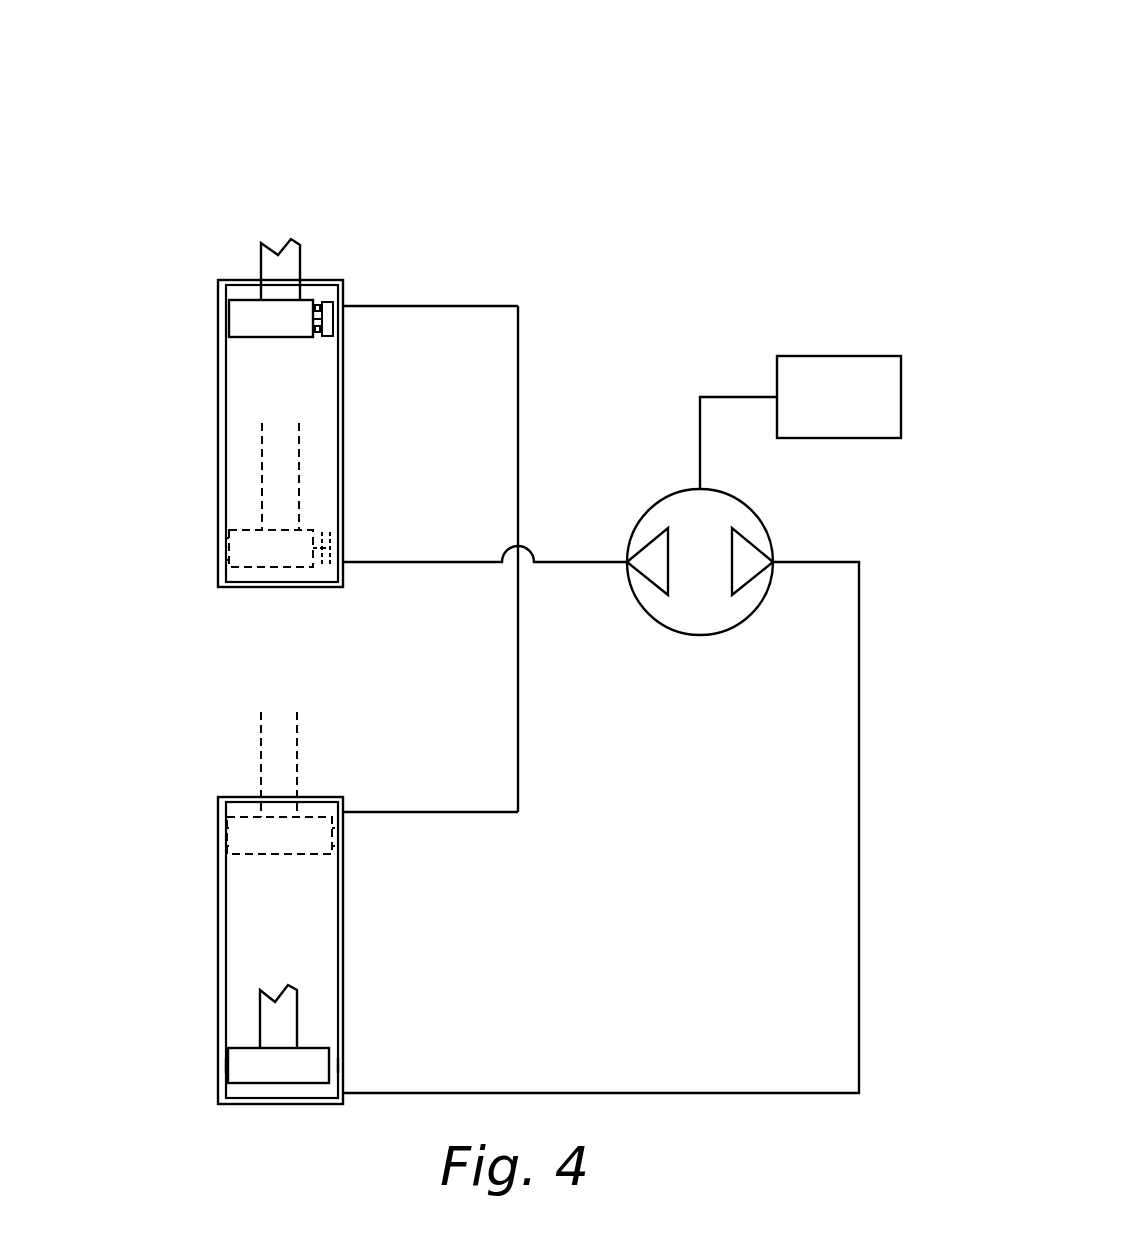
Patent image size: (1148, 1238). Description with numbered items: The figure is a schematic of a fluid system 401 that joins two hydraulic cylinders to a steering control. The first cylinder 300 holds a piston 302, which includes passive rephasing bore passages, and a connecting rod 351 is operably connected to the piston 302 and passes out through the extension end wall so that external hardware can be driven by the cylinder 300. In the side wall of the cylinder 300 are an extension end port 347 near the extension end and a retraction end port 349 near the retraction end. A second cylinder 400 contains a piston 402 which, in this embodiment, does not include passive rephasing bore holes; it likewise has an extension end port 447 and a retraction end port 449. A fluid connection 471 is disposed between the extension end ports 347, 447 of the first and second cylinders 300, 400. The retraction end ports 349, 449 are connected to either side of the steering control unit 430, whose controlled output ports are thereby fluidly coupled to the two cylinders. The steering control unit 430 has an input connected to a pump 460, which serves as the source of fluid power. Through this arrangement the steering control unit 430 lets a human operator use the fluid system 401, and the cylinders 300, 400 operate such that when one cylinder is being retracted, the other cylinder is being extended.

The fluid system 401 is at (722, 190).
The cylinder 300 is at (217, 503).
The piston 302 is at (236, 298).
The connecting rod 351 is at (300, 262).
The extension end port 347 is at (345, 300).
The retraction end port 349 is at (343, 558).
The fluid connection 471 is at (518, 363).
The steering control unit 430 is at (652, 510).
The pump 460 is at (778, 356).
The second cylinder 400 is at (217, 928).
The piston 402 is at (250, 1045).
The extension end port 447 is at (343, 815).
The retraction end port 449 is at (343, 1090).